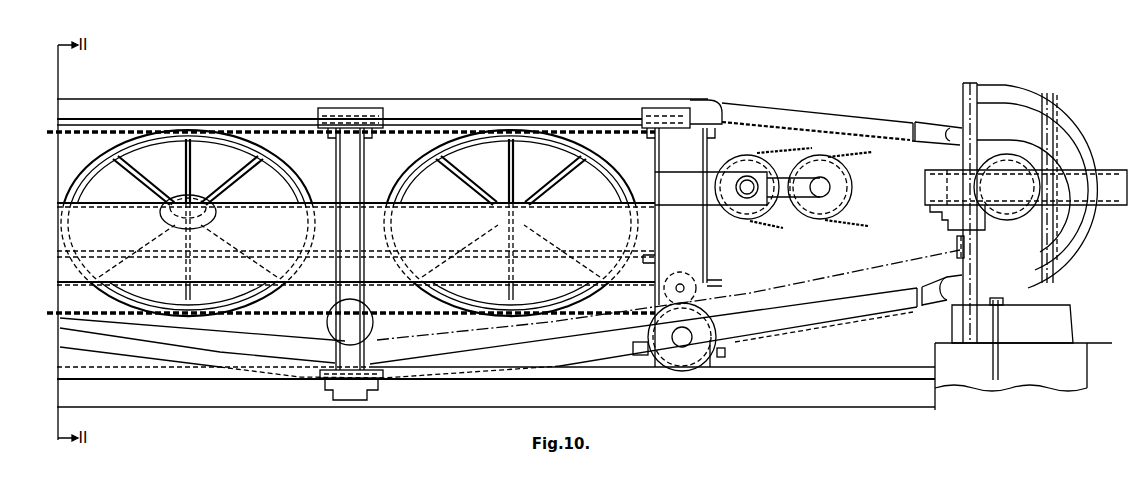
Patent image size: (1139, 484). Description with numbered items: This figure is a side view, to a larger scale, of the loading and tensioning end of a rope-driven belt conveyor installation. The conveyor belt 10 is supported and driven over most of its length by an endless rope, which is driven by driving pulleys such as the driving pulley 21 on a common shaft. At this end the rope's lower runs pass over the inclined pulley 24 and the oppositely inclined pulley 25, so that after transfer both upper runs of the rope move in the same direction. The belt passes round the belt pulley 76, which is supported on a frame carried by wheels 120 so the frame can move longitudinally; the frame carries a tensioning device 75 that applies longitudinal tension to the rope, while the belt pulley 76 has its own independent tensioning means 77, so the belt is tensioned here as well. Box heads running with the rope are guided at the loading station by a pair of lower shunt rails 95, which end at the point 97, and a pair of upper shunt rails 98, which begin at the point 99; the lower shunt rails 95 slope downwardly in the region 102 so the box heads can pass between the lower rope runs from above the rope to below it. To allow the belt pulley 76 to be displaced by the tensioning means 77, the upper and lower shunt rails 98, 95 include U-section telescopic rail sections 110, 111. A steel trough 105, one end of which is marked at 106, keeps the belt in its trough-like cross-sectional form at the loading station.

The conveyor belt 10 is at (808, 287).
The driving pulley 21 is at (218, 375).
The inclined pulley 24 is at (610, 163).
The oppositely inclined pulley 25 is at (273, 168).
The tensioning device 75 is at (757, 162).
The belt pulley 76 is at (1000, 160).
The tensioning means 77 is at (1095, 172).
The lower shunt rails 95 is at (1030, 282).
The end point of lower shunt rails 97 is at (962, 90).
The upper shunt rails 98 is at (927, 125).
The beginning point of upper shunt rails 99 is at (958, 248).
The downwardly sloping region 102 is at (157, 353).
The steel trough 105 is at (86, 100).
The trough end 106 is at (718, 99).
The telescopic rail section 110 is at (835, 118).
The telescopic rail section 111 is at (832, 320).
The wheels 120 is at (718, 355).